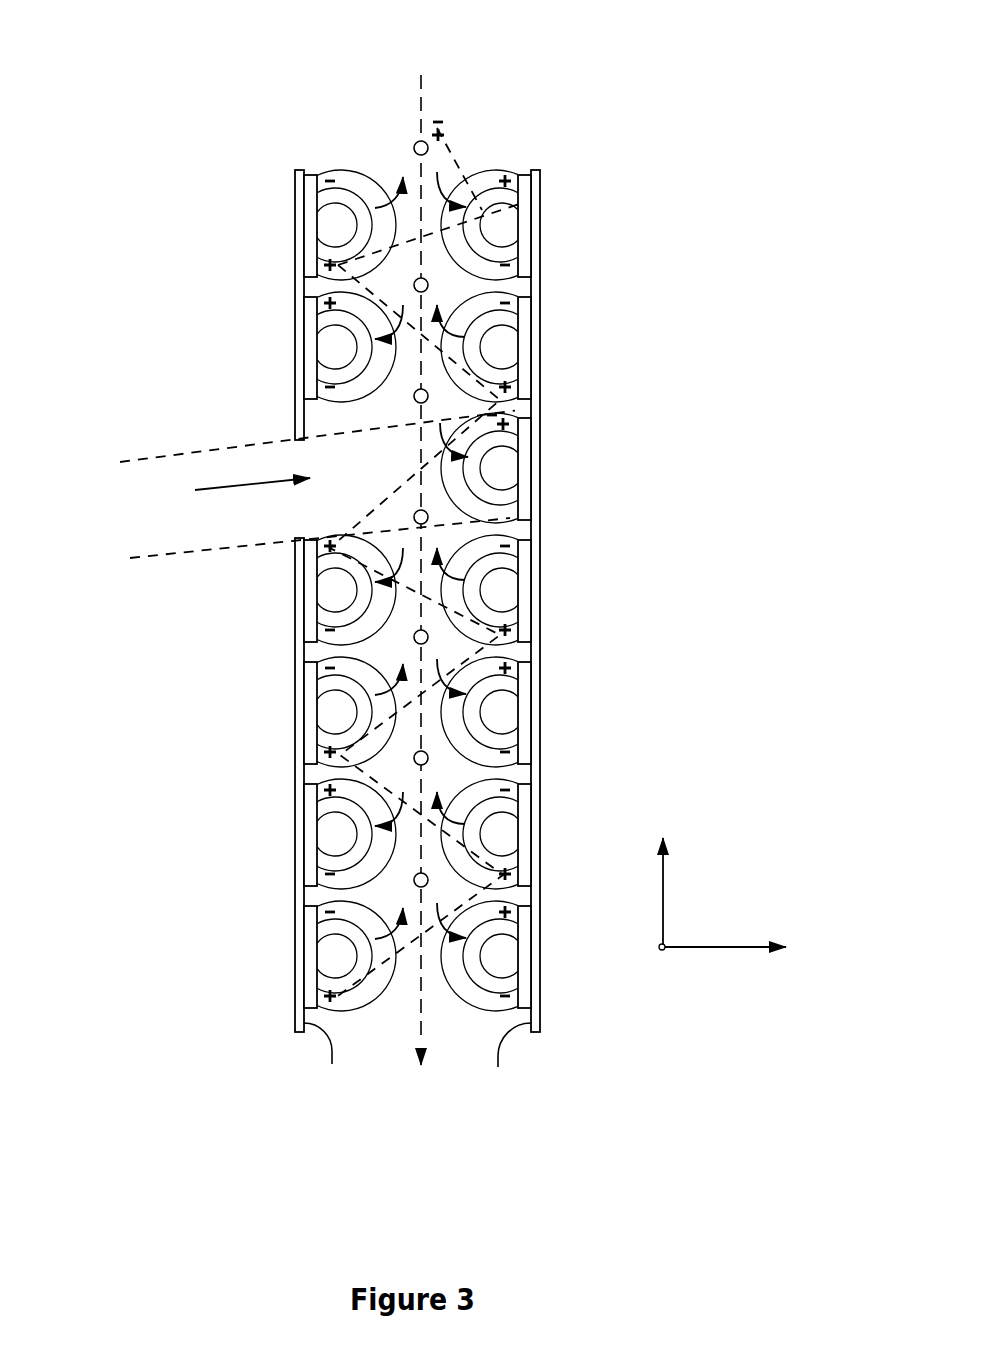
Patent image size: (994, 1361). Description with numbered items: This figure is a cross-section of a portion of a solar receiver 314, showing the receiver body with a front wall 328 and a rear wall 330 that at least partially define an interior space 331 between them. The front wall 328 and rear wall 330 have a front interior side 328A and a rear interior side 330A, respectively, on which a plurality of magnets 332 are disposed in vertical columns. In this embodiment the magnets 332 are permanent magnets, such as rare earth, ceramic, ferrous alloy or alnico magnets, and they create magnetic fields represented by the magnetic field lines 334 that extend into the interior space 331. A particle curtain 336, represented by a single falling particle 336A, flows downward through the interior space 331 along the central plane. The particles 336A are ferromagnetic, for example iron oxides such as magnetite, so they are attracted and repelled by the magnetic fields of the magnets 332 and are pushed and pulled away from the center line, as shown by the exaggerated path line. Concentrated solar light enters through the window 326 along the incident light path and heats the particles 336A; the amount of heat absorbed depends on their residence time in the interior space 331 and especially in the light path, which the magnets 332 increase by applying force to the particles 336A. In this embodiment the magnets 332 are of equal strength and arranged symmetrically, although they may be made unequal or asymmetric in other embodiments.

The beam steering assembly 314 is at (192, 86).
The window 326 is at (252, 455).
The front wall 328 is at (294, 313).
The front interior side 328A is at (333, 1063).
The rear wall 330 is at (541, 375).
The rear interior side 330A is at (499, 1063).
The interior space 331 is at (450, 622).
The magnets 332 is at (510, 219).
The magnetic field lines 334 is at (509, 333).
The particle curtain 336 is at (421, 60).
The ferromagnetic particle 336A is at (409, 143).